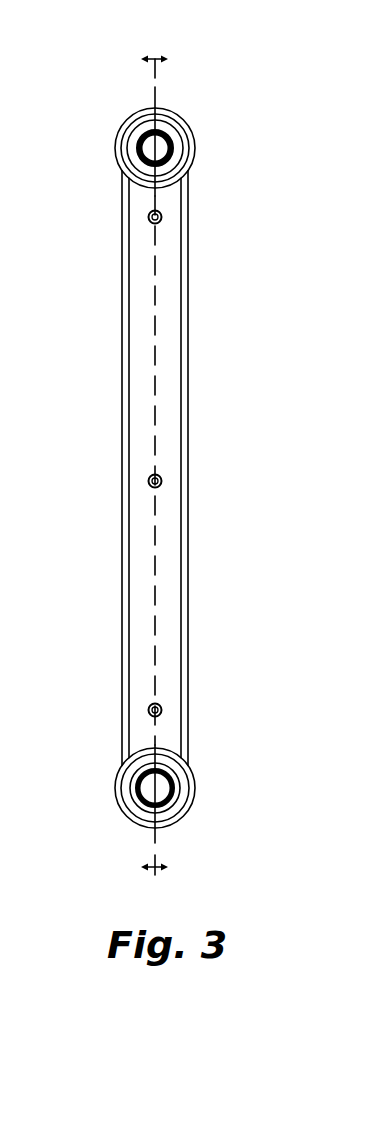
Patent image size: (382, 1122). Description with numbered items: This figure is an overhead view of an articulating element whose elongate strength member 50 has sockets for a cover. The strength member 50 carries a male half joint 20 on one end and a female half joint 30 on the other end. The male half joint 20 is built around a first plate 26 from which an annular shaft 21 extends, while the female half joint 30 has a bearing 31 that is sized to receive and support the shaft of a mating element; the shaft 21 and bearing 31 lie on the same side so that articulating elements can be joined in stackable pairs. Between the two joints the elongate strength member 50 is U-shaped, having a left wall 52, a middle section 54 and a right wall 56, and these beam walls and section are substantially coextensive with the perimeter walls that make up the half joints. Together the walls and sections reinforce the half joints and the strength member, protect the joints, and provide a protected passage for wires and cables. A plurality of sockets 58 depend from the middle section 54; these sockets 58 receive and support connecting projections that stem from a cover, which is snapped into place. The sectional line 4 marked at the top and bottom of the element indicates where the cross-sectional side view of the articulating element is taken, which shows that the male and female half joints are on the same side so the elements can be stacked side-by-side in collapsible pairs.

The male half joint 20 is at (112, 90).
The sectional line 4- 4 is at (168, 463).
The first plate 26 is at (187, 120).
The annular shaft 21 is at (170, 148).
The female half joint 30 is at (204, 774).
The bearing 31 is at (157, 788).
The elongate strength member 50 is at (198, 507).
The left wall 52 is at (126, 345).
The right wall 56 is at (190, 340).
The middle section 54 is at (165, 285).
The sockets 58 is at (148, 219).